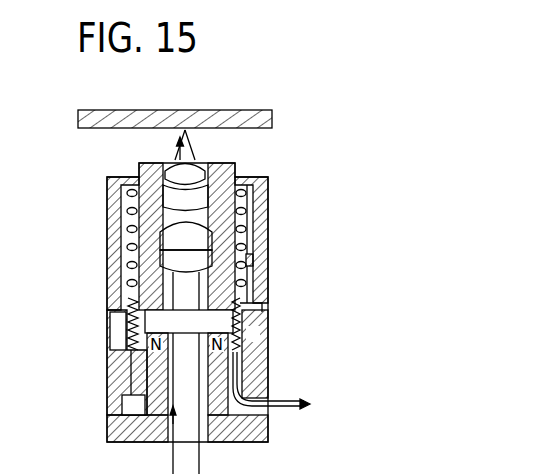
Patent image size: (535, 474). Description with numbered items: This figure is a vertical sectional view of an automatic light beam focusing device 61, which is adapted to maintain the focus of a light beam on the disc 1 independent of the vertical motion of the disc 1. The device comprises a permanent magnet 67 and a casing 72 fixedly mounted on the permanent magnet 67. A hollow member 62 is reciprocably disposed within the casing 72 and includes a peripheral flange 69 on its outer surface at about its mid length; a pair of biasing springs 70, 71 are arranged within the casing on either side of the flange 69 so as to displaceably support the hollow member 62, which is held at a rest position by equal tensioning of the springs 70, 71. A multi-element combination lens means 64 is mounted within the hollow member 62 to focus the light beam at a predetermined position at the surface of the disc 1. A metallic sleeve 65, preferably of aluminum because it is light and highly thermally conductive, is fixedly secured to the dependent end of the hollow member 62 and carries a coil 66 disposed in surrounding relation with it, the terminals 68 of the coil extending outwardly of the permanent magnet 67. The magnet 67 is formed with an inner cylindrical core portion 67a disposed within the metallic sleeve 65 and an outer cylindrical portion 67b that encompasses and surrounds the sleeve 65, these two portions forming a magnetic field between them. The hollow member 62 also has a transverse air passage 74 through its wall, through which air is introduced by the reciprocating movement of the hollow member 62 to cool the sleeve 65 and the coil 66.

The disc 1 is at (248, 111).
The automatic light beam focusing device 61 is at (84, 429).
The hollow member 62 is at (255, 203).
The multi-element combination lens means 64 is at (165, 223).
The metallic sleeve 65 is at (119, 320).
The coil 66 is at (243, 358).
The permanent magnet 67 is at (268, 432).
The inner cylindrical core portion 67a is at (132, 362).
The outer cylindrical portion 67b is at (262, 348).
The terminals 68 is at (286, 387).
The peripheral flange 69 is at (255, 278).
The biasing spring 70 is at (251, 257).
The biasing spring 71 is at (248, 304).
The casing 72 is at (108, 199).
The transverse air passage 74 is at (128, 281).